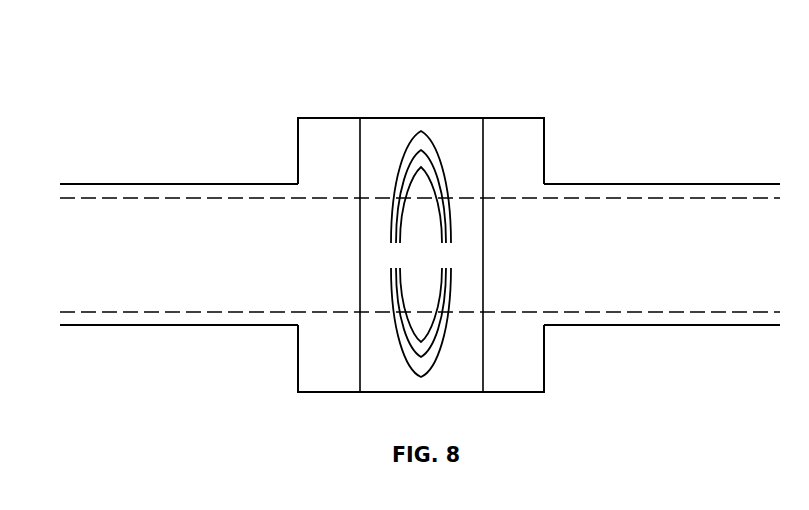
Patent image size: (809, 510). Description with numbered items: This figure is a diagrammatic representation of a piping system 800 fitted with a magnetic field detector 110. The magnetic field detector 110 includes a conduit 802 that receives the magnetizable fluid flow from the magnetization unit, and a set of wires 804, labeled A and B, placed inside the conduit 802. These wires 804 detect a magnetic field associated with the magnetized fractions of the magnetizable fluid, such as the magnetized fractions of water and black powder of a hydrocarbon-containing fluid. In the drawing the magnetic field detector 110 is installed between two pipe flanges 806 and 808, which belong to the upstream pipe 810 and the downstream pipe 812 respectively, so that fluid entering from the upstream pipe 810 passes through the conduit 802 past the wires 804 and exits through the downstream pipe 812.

The piping system 800 is at (203, 62).
The magnetic field detector 110 is at (544, 64).
The conduit 802 is at (459, 118).
The set of wires 804 is at (418, 130).
The pipe flange 806 is at (297, 154).
The pipe flange 808 is at (548, 152).
The upstream pipe 810 is at (182, 184).
The downstream pipe 812 is at (676, 170).